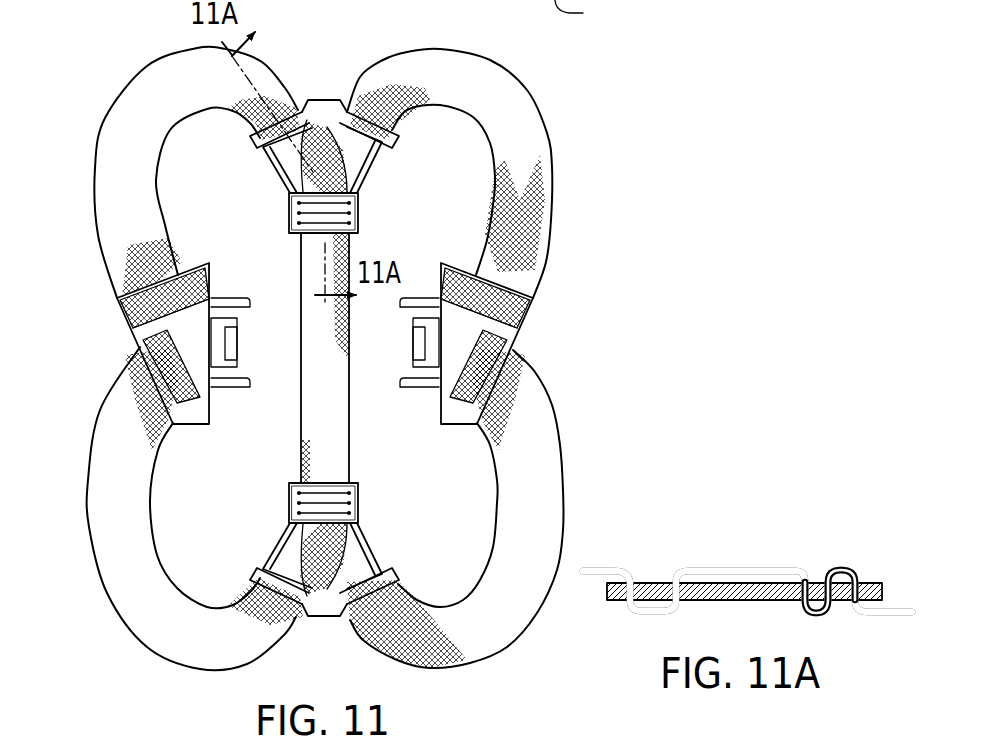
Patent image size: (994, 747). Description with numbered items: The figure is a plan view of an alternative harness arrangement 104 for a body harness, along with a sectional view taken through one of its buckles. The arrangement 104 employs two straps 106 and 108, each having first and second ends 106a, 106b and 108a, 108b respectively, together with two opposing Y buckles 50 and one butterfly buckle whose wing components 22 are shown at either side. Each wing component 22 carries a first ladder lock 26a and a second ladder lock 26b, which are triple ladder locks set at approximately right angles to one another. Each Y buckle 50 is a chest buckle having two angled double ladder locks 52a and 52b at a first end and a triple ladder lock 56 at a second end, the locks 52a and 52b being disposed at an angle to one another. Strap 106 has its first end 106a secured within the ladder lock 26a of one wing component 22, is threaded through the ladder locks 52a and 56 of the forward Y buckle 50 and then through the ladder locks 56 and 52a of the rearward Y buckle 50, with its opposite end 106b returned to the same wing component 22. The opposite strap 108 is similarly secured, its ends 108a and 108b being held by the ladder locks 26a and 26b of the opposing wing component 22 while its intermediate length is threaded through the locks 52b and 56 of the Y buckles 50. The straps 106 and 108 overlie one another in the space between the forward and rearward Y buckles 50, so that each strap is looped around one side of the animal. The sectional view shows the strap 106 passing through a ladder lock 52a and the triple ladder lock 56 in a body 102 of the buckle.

In FIG. 11, the body 102 is at (592, 14).
In FIG. 11, the harness arrangement 104 is at (615, 146).
In FIG. 11, the strap 106 is at (130, 218).
In FIG. 11A, the strap 106 is at (723, 570).
In FIG. 11, the first end of strap 106a is at (152, 282).
In FIG. 11, the second end of strap 106b is at (132, 366).
In FIG. 11, the strap 108 is at (530, 192).
In FIG. 11, the first end of strap 108a is at (532, 268).
In FIG. 11, the second end of strap 108b is at (513, 353).
In FIG. 11, the wing component 22 is at (122, 308).
In FIG. 11, the first ladder lock 26a is at (192, 273).
In FIG. 11, the second ladder lock 26b is at (190, 404).
In FIG. 11, the Y buckle 50 is at (320, 100).
In FIG. 11, the double ladder lock 52a is at (258, 137).
In FIG. 11A, the double ladder lock 52a is at (633, 578).
In FIG. 11, the double ladder lock 52b is at (397, 140).
In FIG. 11, the triple ladder lock 56 is at (358, 212).
In FIG. 11A, the triple ladder lock 56 is at (857, 573).